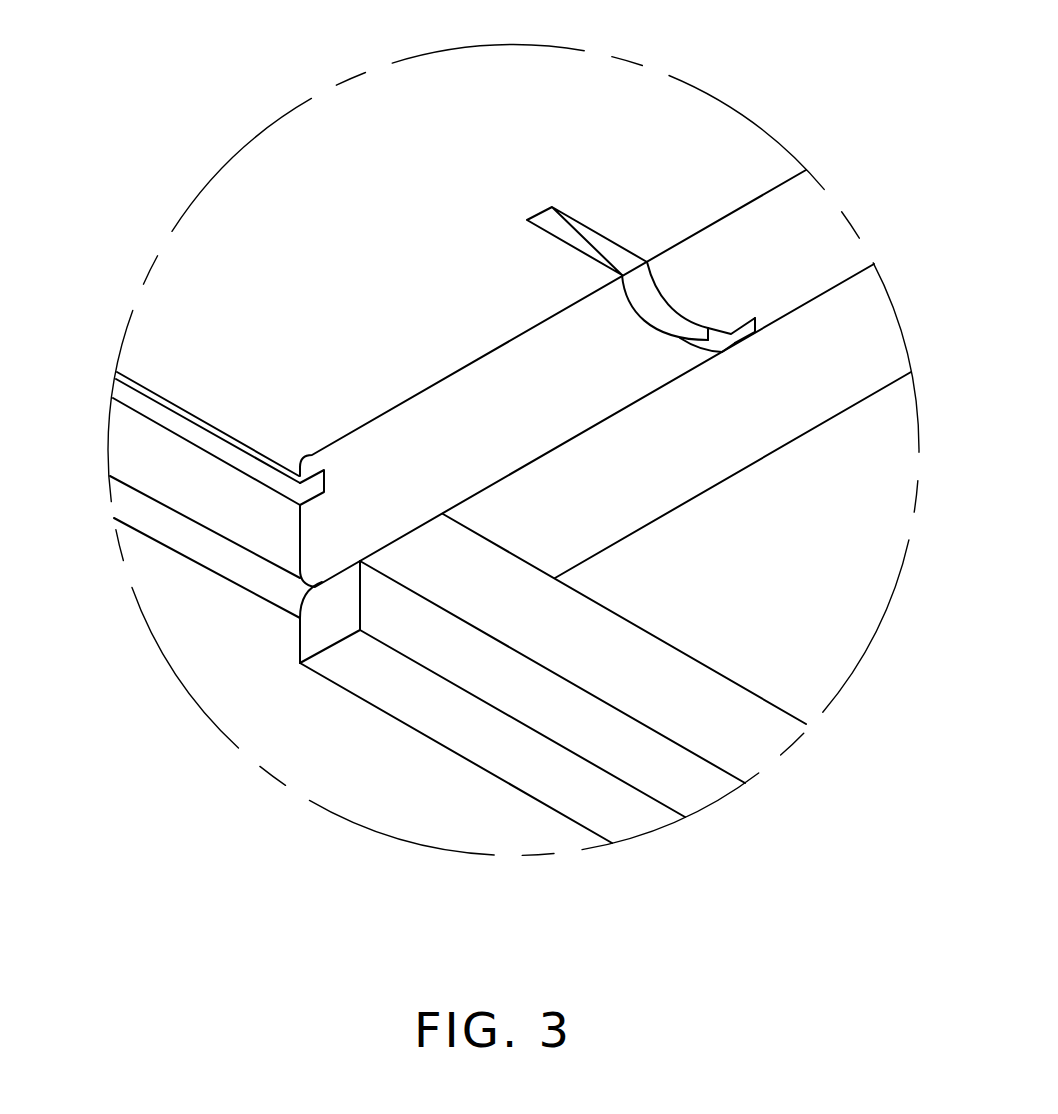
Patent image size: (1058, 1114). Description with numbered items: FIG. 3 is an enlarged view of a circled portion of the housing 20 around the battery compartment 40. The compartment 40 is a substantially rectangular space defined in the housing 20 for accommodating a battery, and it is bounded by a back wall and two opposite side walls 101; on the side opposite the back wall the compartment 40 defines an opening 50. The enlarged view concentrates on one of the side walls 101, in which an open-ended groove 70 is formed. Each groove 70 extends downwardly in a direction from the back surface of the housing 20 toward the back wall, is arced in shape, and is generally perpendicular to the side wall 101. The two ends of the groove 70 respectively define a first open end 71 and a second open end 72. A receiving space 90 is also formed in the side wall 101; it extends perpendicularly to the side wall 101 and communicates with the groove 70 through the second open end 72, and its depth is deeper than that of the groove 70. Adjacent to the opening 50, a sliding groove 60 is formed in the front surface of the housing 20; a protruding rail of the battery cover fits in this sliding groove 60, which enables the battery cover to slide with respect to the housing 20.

The housing 20 is at (292, 221).
The side wall 101 is at (393, 443).
The sliding groove 60 is at (265, 477).
The opening 50 is at (458, 705).
The battery compartment 40 is at (685, 597).
The first open end 71 is at (553, 210).
The groove 70 is at (667, 322).
The second open end 72 is at (720, 335).
The receiving space 90 is at (737, 333).